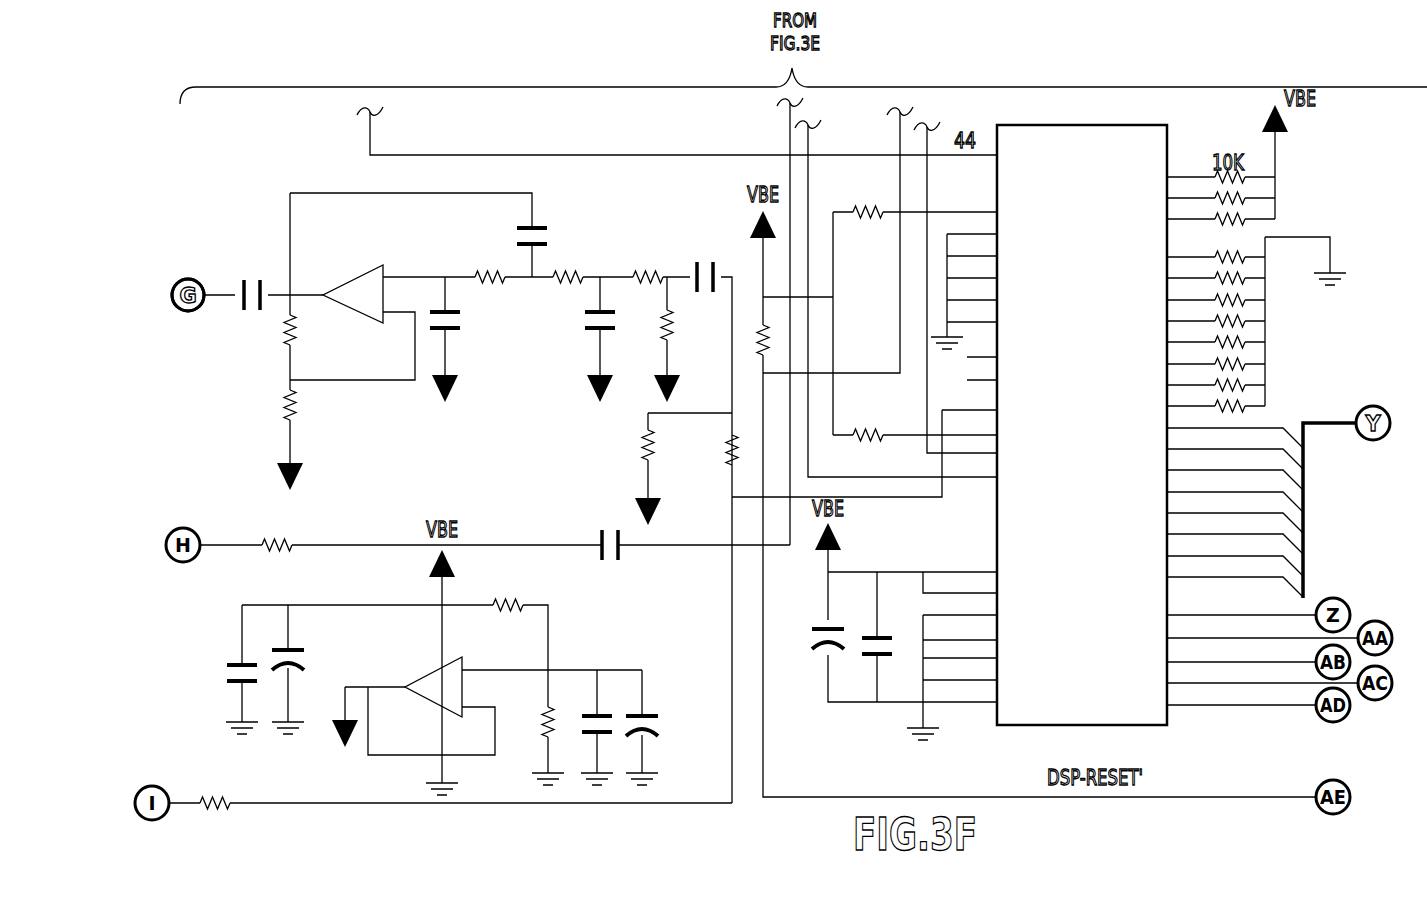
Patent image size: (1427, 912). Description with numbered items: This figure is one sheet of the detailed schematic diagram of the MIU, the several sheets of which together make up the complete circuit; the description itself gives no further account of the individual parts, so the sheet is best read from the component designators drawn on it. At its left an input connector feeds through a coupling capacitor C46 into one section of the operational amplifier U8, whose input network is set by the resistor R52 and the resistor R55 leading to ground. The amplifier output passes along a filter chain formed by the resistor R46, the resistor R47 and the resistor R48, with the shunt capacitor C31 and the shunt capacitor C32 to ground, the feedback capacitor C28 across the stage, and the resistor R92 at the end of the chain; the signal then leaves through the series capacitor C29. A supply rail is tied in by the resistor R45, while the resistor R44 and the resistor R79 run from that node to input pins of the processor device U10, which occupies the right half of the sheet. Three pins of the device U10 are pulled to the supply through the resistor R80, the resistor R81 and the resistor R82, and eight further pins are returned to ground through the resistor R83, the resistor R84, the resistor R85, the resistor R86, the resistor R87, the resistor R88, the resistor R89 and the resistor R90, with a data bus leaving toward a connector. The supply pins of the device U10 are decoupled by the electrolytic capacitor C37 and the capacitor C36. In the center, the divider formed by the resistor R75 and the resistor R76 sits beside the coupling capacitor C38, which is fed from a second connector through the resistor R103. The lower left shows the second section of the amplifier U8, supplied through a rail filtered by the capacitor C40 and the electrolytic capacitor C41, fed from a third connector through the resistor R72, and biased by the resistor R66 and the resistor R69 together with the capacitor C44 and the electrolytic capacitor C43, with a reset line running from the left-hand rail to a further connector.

The capacitor C46 .47/16V C46 is at (250, 268).
The LM348 operational amplifier U8 is at (388, 536).
The resistor R52 68K R52 is at (307, 331).
The resistor R55 39K R55 is at (308, 414).
The capacitor C28 .0033 C28 is at (568, 220).
The capacitor C31 .0033 C31 is at (468, 339).
The resistor R46 12K R46 is at (490, 276).
The resistor R47 12K R47 is at (568, 276).
The resistor R48 1.8K R48 is at (648, 276).
The capacitor C32 .033 C32 is at (579, 339).
The resistor R92 100K R92 is at (686, 339).
The capacitor C29 .47/16V C29 is at (703, 250).
The resistor R45 10K R45 is at (749, 319).
The resistor R44 10K R44 is at (915, 308).
The resistor R79 10K R79 is at (915, 432).
The digital signal processor U10 is at (1109, 409).
The resistor R80 10K R80 is at (1240, 177).
The resistor R81 10K R81 is at (1240, 198).
The resistor R82 10K R82 is at (1240, 219).
The resistor R83 is at (1235, 257).
The resistor R84 is at (1235, 278).
The resistor R85 is at (1235, 300).
The resistor R86 is at (1235, 321).
The resistor R87 is at (1235, 342).
The resistor R88 is at (1235, 364).
The resistor R89 is at (1235, 385).
The resistor R90 is at (1235, 406).
The capacitor C37 1/16V C37 is at (807, 640).
The capacitor C36 .1 C36 is at (890, 637).
The resistor R75 4.7K R75 is at (667, 469).
The resistor R76 5.1K R76 is at (711, 458).
The resistor R103 10K R103 is at (283, 545).
The capacitor C38 .047uF C38 is at (606, 545).
The resistor R72 10K R72 is at (215, 785).
The capacitor C40 .1 C40 is at (223, 669).
The capacitor C41 1/16V C41 is at (320, 669).
The resistor R66 10K R66 is at (508, 603).
The resistor R69 10K R69 is at (530, 715).
The capacitor C44 .1 C44 is at (592, 727).
The capacitor C43 1/16V C43 is at (670, 727).